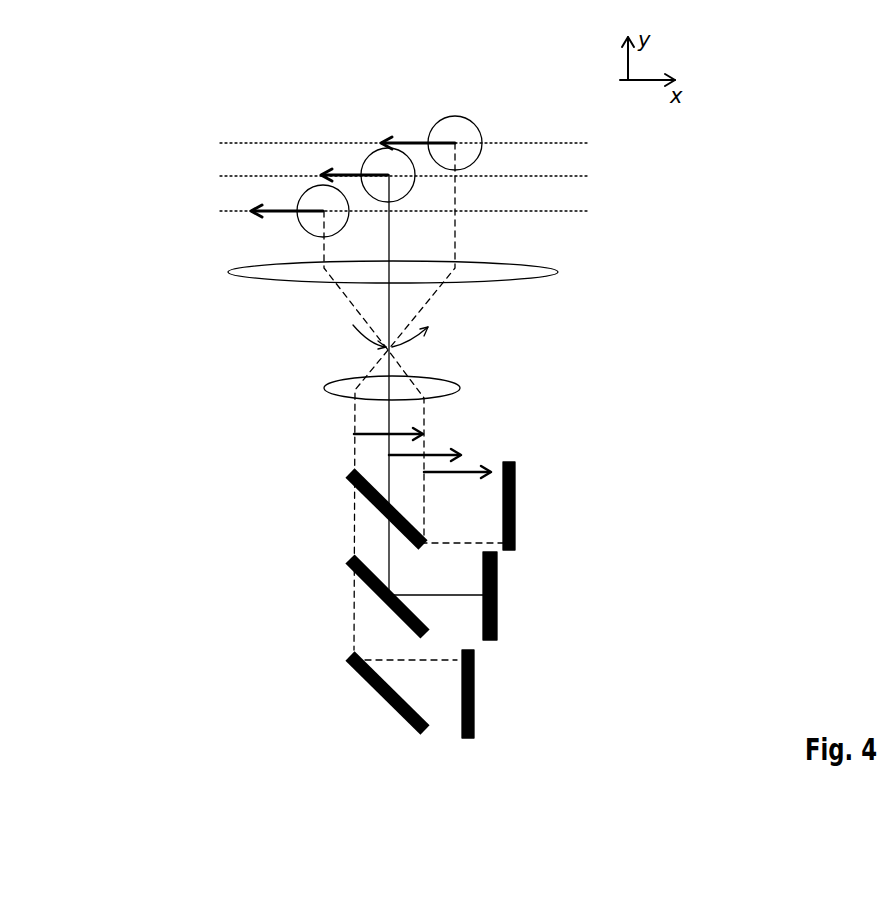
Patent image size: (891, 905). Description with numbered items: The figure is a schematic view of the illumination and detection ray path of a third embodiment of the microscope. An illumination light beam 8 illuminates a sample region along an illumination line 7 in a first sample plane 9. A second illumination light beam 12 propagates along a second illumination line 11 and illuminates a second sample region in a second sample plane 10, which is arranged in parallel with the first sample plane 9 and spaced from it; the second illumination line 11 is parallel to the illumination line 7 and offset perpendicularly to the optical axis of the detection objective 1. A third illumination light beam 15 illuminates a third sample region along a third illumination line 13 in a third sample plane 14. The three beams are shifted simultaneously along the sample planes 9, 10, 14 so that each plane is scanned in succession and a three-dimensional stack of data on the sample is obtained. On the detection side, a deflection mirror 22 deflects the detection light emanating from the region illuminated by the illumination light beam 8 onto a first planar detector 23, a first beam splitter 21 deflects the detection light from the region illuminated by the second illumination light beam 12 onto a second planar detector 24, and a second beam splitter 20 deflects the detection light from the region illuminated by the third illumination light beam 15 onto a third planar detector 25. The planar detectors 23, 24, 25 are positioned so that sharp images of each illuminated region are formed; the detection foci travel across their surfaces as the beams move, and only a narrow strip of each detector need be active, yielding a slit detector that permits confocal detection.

The detection objective 1 is at (524, 304).
The illumination line 7 is at (453, 143).
The illumination light beam 8 is at (453, 130).
The first sample plane 9 is at (572, 143).
The second sample plane 10 is at (570, 177).
The second illumination line 11 is at (367, 169).
The second illumination light beam 12 is at (375, 153).
The third illumination line 13 is at (323, 211).
The third sample plane 14 is at (567, 212).
The third illumination light beam 15 is at (308, 196).
The second beam splitter 20 is at (348, 474).
The first beam splitter 21 is at (348, 563).
The deflection mirror 22 is at (348, 663).
The first planar detector 23 is at (473, 684).
The second planar detector 24 is at (497, 582).
The third planar detector 25 is at (517, 487).